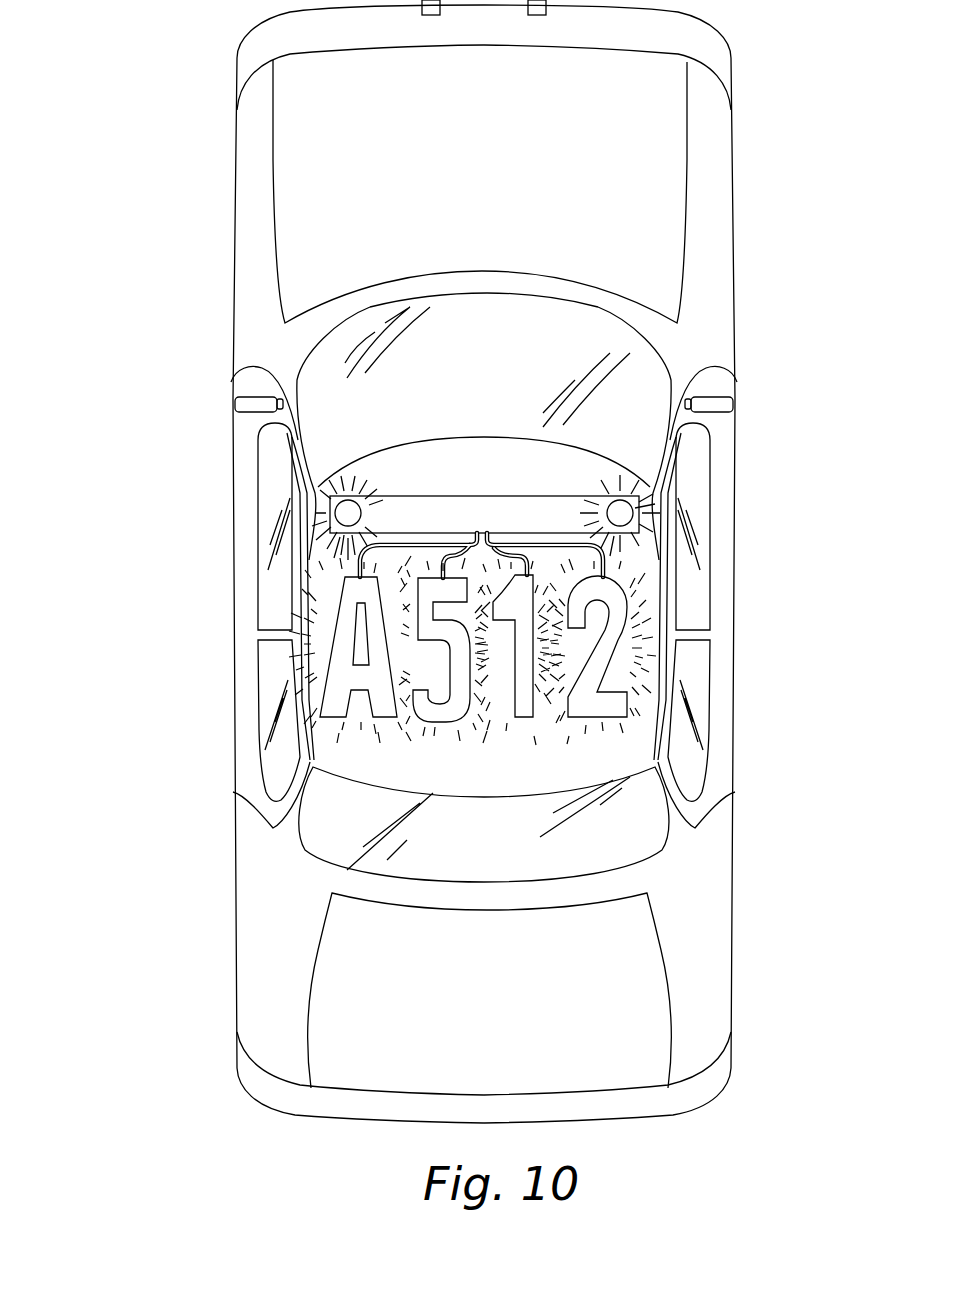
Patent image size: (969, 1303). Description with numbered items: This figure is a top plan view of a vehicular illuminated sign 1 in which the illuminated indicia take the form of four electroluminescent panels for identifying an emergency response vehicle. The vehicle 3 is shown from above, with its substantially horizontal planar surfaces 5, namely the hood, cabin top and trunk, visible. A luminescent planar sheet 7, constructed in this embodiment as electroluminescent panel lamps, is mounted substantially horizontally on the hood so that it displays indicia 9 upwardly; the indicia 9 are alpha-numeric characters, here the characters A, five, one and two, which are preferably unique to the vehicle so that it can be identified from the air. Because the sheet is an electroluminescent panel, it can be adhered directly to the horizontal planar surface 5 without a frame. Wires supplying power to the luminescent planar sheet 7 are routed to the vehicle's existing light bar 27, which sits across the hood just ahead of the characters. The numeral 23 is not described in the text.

The vehicular illuminated sign 1 is at (114, 224).
The vehicle 3 is at (715, 249).
The horizontal planar surfaces 5 is at (491, 191).
The luminescent planar sheet 7 is at (643, 560).
The indicia 9 is at (340, 688).
The illumination rays 23 is at (637, 633).
The light bar 27 is at (335, 516).